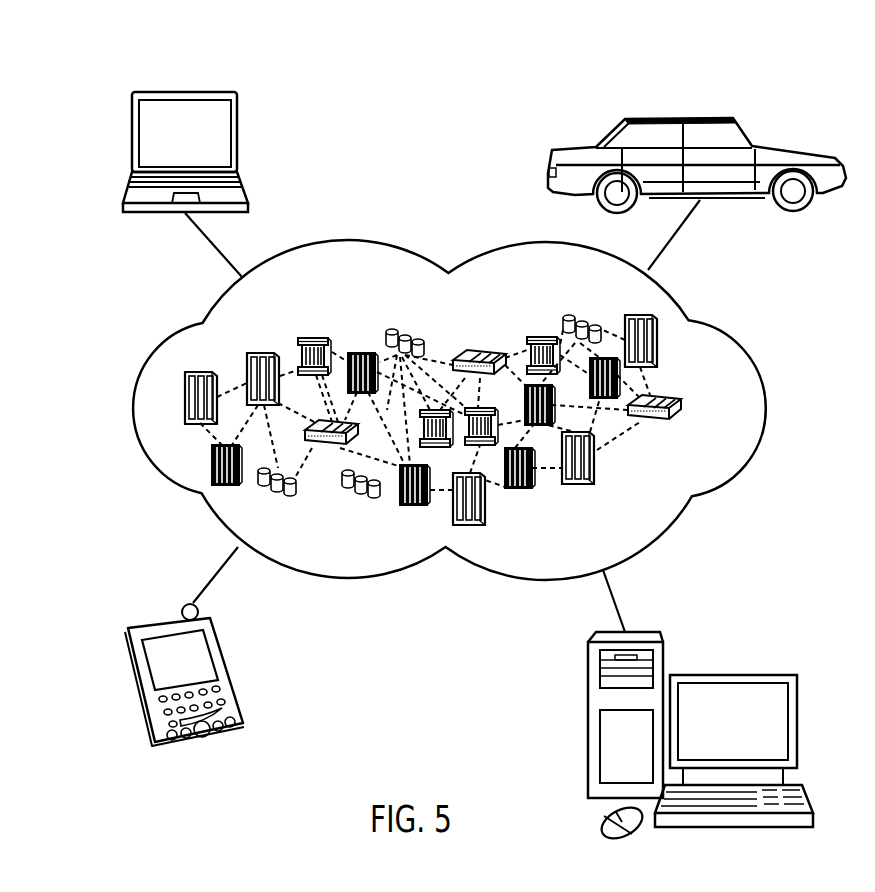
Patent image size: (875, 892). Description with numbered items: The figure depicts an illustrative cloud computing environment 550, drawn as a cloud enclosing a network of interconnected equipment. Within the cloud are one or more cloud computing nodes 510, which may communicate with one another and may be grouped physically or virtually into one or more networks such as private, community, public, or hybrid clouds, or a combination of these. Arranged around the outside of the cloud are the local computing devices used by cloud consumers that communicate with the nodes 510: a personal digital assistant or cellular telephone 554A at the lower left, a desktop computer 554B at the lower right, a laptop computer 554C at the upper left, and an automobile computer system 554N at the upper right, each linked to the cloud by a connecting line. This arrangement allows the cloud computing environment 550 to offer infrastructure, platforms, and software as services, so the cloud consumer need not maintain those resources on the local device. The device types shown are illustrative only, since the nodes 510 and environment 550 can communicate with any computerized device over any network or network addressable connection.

The cloud computing environment 550 is at (748, 326).
The cloud computing node 510 is at (688, 407).
The laptop computer 554C is at (184, 91).
The automobile computer system 554N is at (675, 117).
The personal digital assistant (PDA) or cellular telephone 554A is at (168, 620).
The desktop computer 554B is at (733, 673).